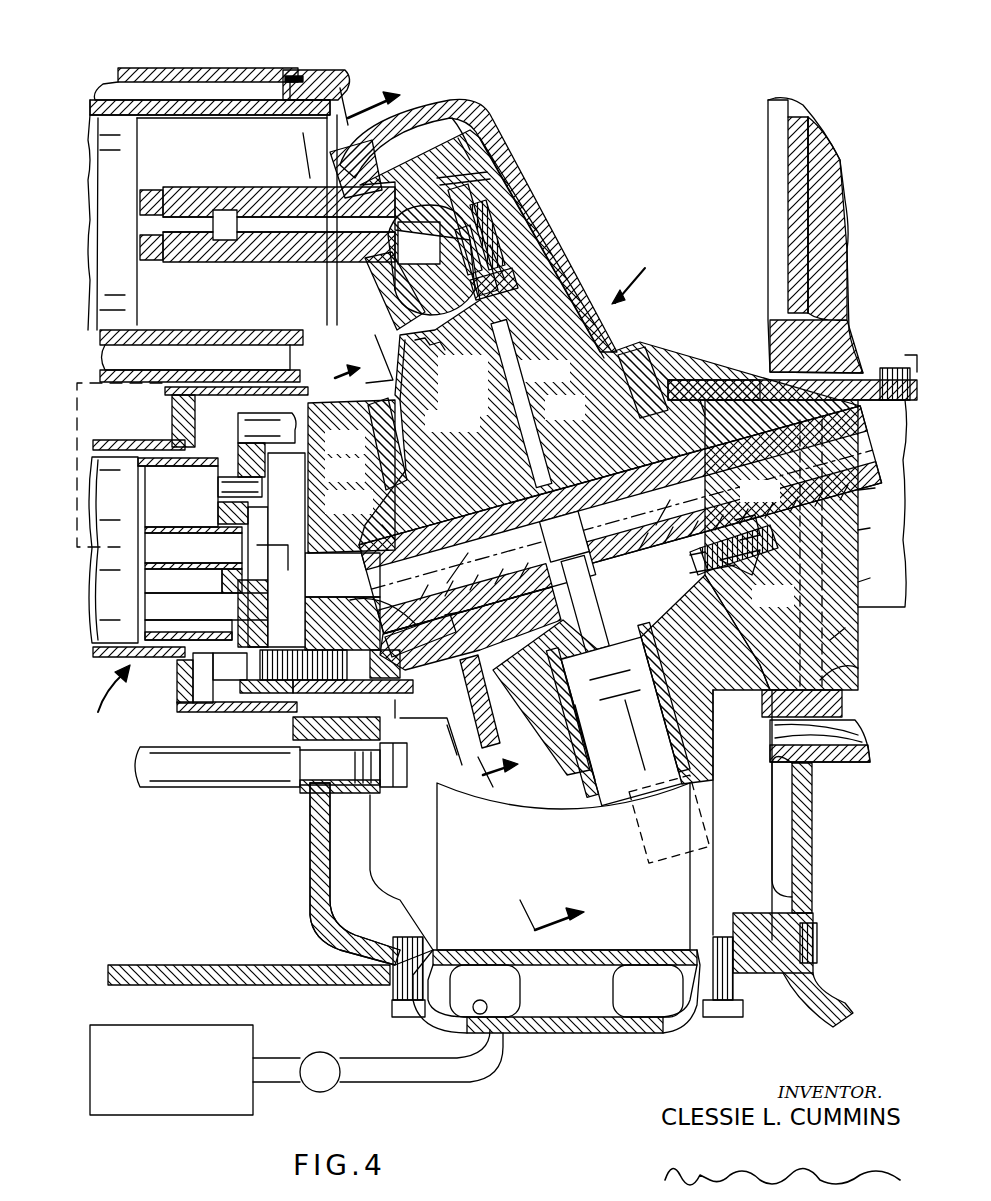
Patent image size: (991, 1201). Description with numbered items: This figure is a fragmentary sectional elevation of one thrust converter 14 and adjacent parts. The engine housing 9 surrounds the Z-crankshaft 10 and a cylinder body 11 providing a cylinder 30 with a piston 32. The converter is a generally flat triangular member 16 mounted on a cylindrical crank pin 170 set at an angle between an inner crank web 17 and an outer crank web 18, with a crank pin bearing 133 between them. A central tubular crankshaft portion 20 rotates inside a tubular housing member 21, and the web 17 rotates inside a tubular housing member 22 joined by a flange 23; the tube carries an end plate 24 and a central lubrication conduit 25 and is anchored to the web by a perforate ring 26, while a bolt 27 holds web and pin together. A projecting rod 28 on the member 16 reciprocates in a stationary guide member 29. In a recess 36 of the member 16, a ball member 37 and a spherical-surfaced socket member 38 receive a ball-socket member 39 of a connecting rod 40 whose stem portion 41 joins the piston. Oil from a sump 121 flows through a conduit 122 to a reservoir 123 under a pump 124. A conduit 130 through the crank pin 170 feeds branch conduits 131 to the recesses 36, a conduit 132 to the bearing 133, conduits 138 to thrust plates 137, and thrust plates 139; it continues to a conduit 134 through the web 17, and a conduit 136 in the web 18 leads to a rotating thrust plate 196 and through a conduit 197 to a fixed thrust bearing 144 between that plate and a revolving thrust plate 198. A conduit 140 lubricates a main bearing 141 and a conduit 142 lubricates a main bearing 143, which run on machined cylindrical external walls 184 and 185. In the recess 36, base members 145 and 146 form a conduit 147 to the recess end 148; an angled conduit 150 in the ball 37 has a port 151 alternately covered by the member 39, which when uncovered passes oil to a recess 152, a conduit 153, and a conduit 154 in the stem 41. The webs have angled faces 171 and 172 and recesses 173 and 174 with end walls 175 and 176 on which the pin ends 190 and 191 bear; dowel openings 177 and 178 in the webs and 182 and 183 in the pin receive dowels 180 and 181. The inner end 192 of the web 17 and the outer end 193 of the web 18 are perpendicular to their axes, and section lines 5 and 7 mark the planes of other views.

The section line 5 is at (469, 499).
The section line 7 is at (426, 570).
The engine housing 9 is at (330, 68).
The crankshaft 10 is at (104, 702).
The cylinder body 11 is at (232, 68).
The thrust converter 14 is at (641, 273).
The generally flat, generally triangular member 16 is at (609, 337).
The inner crank web 17 is at (351, 476).
The outer crank web 18 is at (806, 545).
The central tubular hollow cylindrical crankshaft portion 20 is at (153, 548).
The tubular housing member 21 is at (132, 440).
The tubular housing member 22 is at (255, 690).
The flange 23 is at (177, 688).
The end plate 24 is at (217, 507).
The central lubrication conduit 25 is at (192, 570).
The perforate ring 26 is at (240, 450).
The bolt 27 is at (810, 542).
The projecting rod 28 is at (632, 812).
The stationary guide member 29 is at (563, 866).
The cylinder 30 is at (240, 330).
The piston 32 is at (128, 158).
The recess 36 is at (440, 110).
The ball member 37 is at (431, 260).
The spherical-surfaced socket member 38 is at (330, 178).
The ball-socket member 39 is at (395, 265).
The connecting rod 40 is at (225, 262).
The stem portion 41 is at (262, 262).
The sump 121 is at (492, 1022).
The conduit 122 is at (412, 1068).
The reservoir 123 is at (165, 1115).
The pump 124 is at (335, 1090).
The conduit 130 is at (525, 540).
The branch conduit 131 is at (512, 393).
The conduit 132 is at (593, 580).
The crank pin bearing 133 is at (700, 628).
The conduit 134 is at (342, 575).
The conduit 136 is at (750, 400).
The thrust plate 137 is at (662, 370).
The conduit 138 is at (557, 549).
The thrust plate 139 is at (405, 442).
The conduit 140 is at (300, 497).
The main bearing 141 is at (290, 718).
The conduit 142 is at (845, 628).
The main bearing 143 is at (858, 668).
The fixed thrust bearing 144 is at (890, 370).
The base member 145 is at (465, 160).
The base member 146 is at (492, 230).
The conduit 147 is at (510, 288).
The end 148 is at (485, 205).
The angled conduit 150 is at (470, 178).
The port 151 is at (446, 360).
The recess 152 is at (455, 120).
The conduit 153 is at (460, 142).
The conduit 154 is at (260, 228).
The crank pin 170 is at (470, 628).
The face 171 is at (407, 405).
The face 172 is at (752, 698).
The recess 173 is at (505, 666).
The recess 174 is at (692, 574).
The end wall 175 is at (472, 612).
The end wall 176 is at (677, 546).
The dowel opening 177 is at (372, 618).
The dowel opening 178 is at (879, 521).
The dowel 180 is at (402, 602).
The dowel 181 is at (750, 518).
The dowel opening 182 is at (465, 650).
The dowel opening 183 is at (758, 547).
The machined cylindrical external wall 184 is at (388, 748).
The machined cylindrical external wall 185 is at (745, 398).
The end 190 is at (382, 525).
The end 191 is at (703, 410).
The inner end 192 is at (220, 682).
The outer end 193 is at (866, 585).
The rotating thrust plate 196 is at (880, 496).
The conduit 197 is at (838, 362).
The revolving thrust plate 198 is at (905, 355).